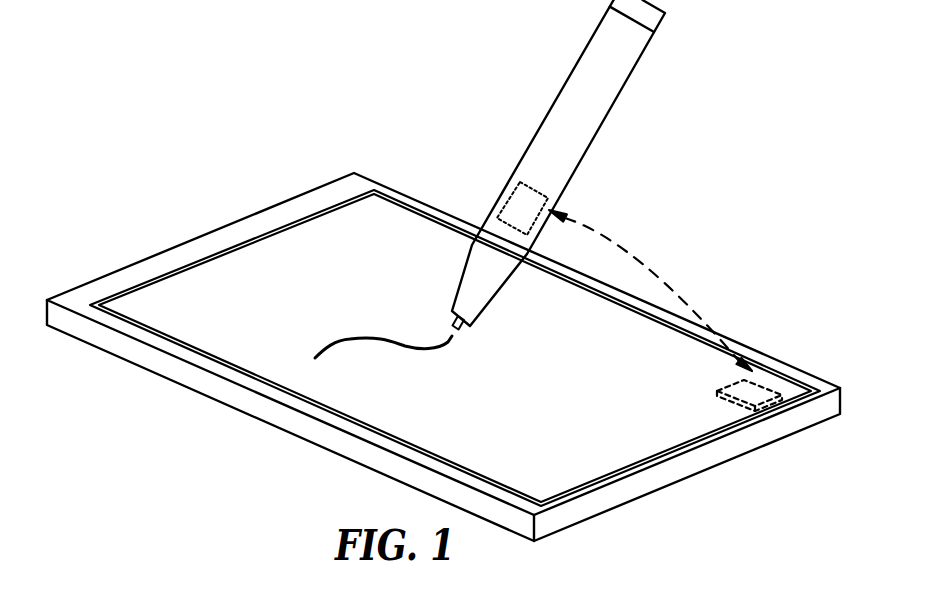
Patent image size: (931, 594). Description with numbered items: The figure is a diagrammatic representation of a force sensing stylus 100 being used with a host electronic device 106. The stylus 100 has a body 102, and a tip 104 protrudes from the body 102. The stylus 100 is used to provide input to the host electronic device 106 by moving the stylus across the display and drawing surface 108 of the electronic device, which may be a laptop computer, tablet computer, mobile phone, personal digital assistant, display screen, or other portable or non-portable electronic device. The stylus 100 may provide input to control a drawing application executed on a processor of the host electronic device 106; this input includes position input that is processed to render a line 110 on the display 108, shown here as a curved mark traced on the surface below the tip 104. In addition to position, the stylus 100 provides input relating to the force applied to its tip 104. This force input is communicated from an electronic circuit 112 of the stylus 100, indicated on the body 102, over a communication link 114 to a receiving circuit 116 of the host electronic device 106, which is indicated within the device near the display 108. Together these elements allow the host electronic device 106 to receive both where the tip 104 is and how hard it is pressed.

The force sensing stylus 100 is at (443, 270).
The body 102 is at (569, 80).
The tip 104 is at (453, 331).
The host electronic device 106 is at (240, 221).
The display and drawing surface 108 is at (358, 239).
The line 110 is at (383, 342).
The electronic circuit 112 is at (500, 198).
The communication link 114 is at (653, 275).
The receiving circuit 116 is at (750, 391).